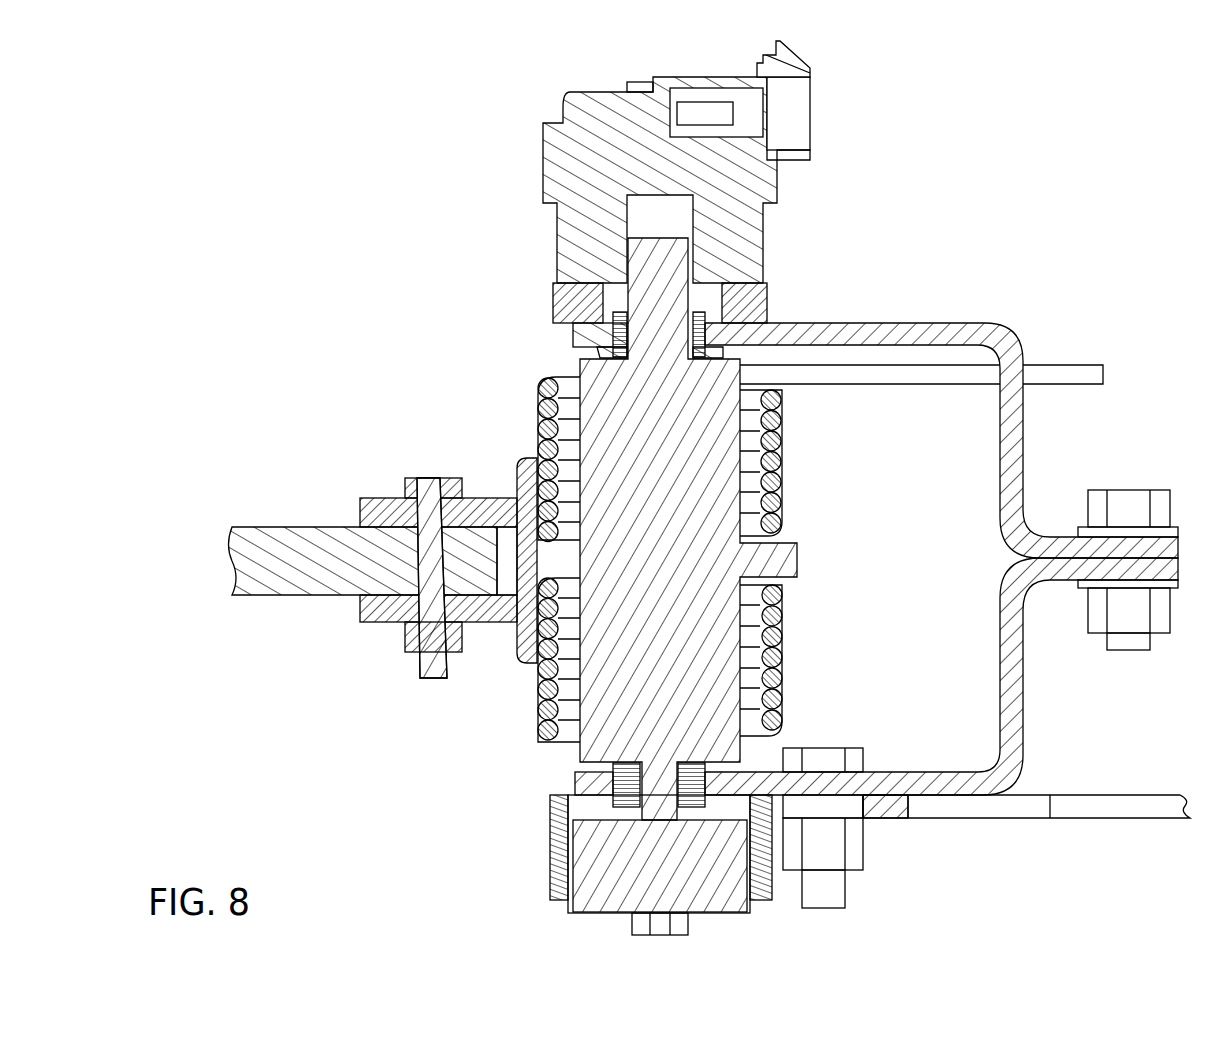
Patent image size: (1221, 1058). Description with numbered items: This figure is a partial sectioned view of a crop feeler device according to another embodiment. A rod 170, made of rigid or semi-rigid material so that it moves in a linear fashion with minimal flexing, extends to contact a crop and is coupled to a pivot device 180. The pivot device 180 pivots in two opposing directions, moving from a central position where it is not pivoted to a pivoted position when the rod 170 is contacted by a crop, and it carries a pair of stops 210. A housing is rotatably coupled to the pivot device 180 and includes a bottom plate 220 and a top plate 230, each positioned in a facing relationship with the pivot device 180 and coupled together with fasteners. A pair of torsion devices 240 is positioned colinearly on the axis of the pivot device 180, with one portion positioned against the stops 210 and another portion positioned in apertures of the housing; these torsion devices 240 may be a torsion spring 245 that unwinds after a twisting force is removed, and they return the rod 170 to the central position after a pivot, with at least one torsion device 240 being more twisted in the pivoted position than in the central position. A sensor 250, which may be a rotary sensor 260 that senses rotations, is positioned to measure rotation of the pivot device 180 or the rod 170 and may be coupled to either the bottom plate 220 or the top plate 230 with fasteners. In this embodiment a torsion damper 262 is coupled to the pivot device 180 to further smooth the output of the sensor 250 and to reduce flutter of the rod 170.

The rod 170 is at (270, 550).
The pivot device 180 is at (637, 407).
The stops 210 is at (518, 468).
The bottom plate 220 is at (1013, 767).
The top plate 230 is at (1020, 337).
The torsion devices 240 is at (814, 491).
The torsion spring 245 is at (790, 440).
The sensor 250 is at (603, 55).
The rotary sensor 260 is at (575, 147).
The torsion damper 262 is at (615, 875).